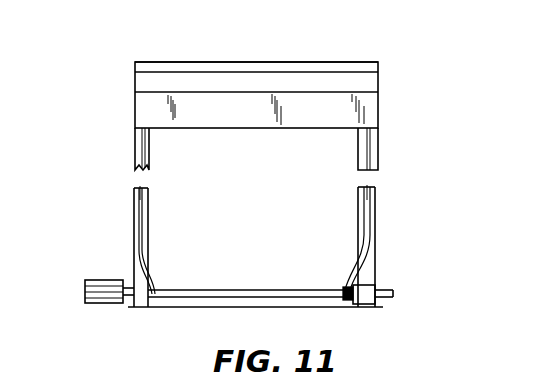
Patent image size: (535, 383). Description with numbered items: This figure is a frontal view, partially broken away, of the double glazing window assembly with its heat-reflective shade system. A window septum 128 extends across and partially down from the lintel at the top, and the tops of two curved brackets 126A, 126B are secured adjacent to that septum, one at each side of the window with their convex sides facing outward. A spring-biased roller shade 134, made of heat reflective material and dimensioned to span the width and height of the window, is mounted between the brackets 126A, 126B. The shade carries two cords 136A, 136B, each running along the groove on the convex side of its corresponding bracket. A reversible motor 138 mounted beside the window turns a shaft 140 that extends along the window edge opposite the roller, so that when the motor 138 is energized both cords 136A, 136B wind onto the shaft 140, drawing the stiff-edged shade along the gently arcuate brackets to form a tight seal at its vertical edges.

The window septum 128 is at (378, 63).
The spring-biased roller shade 134 is at (378, 110).
The cord 136A is at (145, 149).
The cord 136B is at (362, 144).
The bracket 126A is at (149, 223).
The bracket 126B is at (373, 215).
The reversible motor 138 is at (103, 280).
The shaft 140 is at (282, 290).